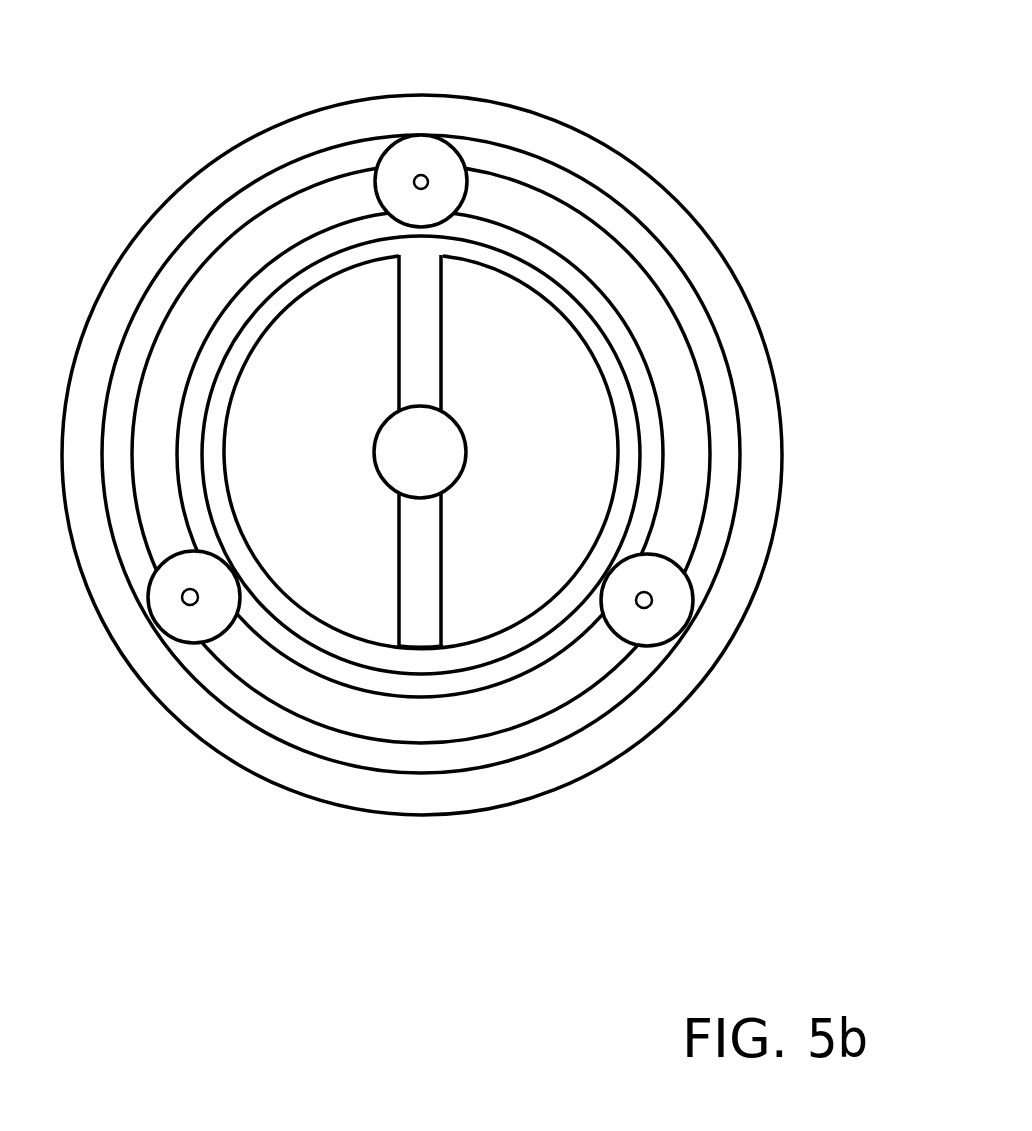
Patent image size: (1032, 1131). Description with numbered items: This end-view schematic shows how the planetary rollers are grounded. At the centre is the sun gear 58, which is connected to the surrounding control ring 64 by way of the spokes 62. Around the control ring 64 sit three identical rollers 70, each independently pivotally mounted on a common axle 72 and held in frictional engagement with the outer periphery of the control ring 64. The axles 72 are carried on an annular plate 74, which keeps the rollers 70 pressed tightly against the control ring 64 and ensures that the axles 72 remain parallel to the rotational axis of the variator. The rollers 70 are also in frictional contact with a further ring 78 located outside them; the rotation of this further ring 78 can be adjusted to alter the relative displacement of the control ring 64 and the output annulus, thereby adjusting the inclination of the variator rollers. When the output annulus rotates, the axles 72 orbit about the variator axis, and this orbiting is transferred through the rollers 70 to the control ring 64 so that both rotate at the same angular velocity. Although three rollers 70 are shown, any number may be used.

The sun gear 58 is at (466, 467).
The spokes 62 is at (441, 357).
The control ring 64 is at (225, 514).
The rollers 70 is at (465, 155).
The axles 72 is at (421, 174).
The annular plate 74 is at (683, 403).
The further ring 78 is at (675, 220).